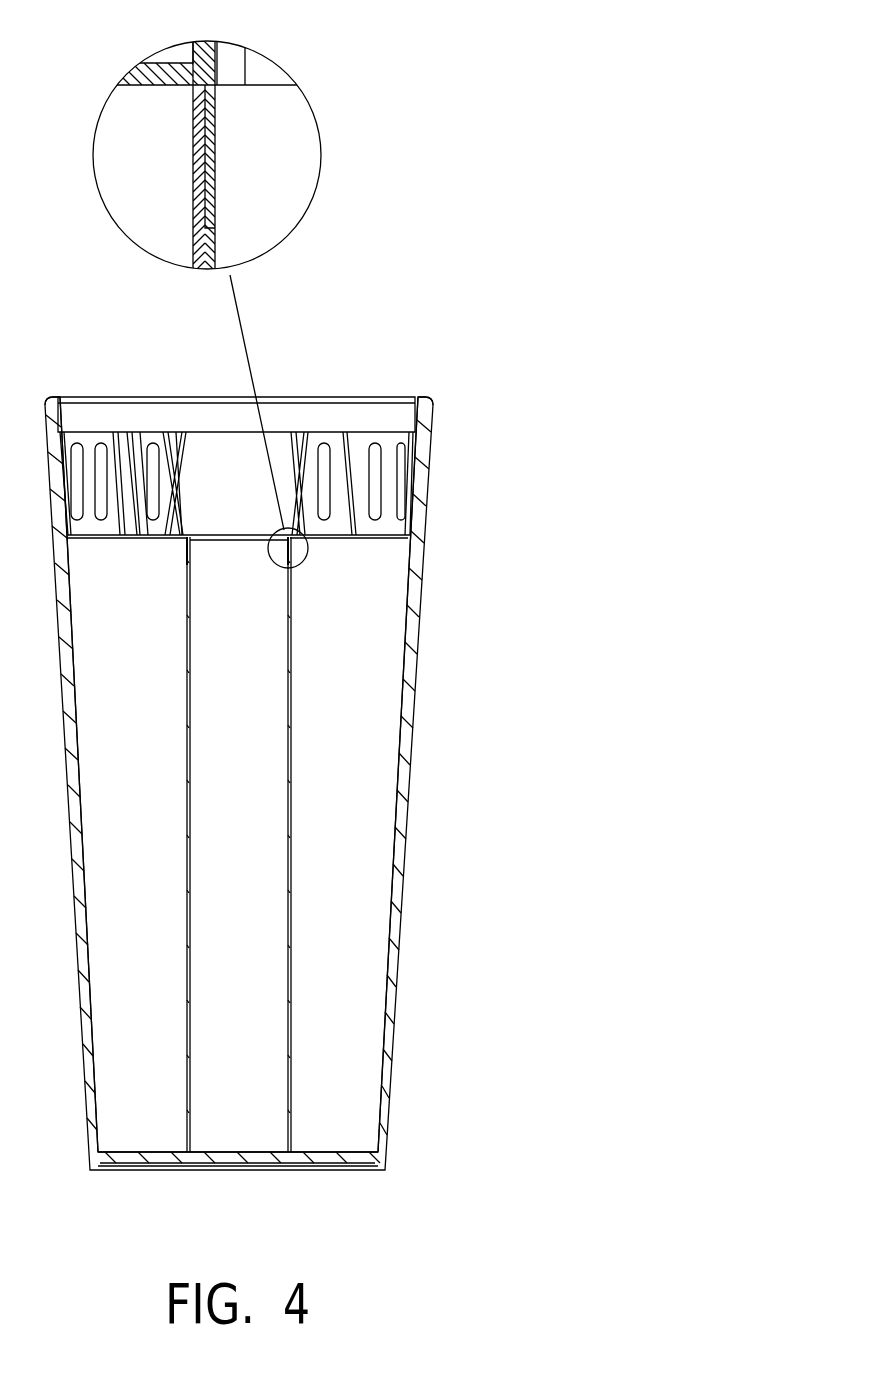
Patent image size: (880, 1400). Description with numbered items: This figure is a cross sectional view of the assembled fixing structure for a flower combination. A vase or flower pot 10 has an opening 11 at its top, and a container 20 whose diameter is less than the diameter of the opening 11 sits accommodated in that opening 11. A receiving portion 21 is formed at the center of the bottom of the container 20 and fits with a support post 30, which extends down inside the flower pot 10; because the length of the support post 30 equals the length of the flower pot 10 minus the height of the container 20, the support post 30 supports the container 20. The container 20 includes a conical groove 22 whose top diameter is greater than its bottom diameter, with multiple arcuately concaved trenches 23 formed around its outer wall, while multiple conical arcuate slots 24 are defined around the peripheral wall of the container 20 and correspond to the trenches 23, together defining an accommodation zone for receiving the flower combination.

The flower pot 10 is at (405, 913).
The opening 11 is at (415, 418).
The container 20 is at (410, 493).
The receiving portion 21 is at (213, 147).
The conical groove 22 is at (181, 440).
The arcuately concaved trench 23 is at (170, 440).
The arcuate slot 24 is at (133, 450).
The support post 30 is at (291, 822).